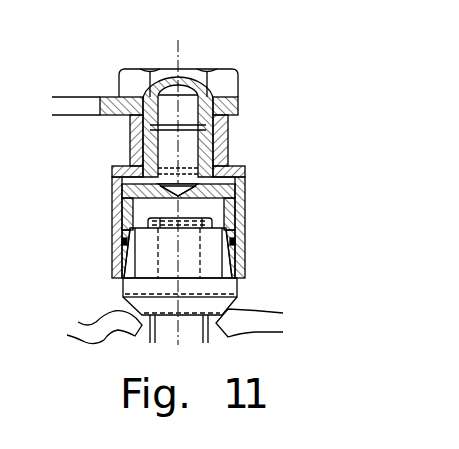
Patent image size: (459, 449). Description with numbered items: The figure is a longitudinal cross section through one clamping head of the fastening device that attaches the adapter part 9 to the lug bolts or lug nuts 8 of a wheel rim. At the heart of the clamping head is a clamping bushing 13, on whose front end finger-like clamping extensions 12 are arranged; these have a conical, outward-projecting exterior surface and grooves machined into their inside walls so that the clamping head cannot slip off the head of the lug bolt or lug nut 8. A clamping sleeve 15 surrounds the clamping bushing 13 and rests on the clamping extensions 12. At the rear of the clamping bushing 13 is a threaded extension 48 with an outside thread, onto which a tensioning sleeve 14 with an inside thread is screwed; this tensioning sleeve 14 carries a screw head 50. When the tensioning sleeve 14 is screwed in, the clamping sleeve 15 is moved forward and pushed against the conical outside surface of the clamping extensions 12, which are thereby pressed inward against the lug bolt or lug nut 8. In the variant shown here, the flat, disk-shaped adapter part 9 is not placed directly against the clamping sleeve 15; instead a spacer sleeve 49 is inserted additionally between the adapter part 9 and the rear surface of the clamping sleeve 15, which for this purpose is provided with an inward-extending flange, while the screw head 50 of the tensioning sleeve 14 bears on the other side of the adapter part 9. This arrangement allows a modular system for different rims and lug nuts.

The lug bolt or lug nut 8 is at (212, 258).
The adapter part 9 is at (112, 101).
The clamping extensions 12 is at (121, 276).
The clamping bushing 13 is at (114, 217).
The tensioning sleeve 14 is at (228, 130).
The clamping sleeve 15 is at (240, 212).
The threaded extension 48 is at (165, 148).
The spacer sleeve 49 is at (228, 150).
The screw head 50 is at (230, 82).